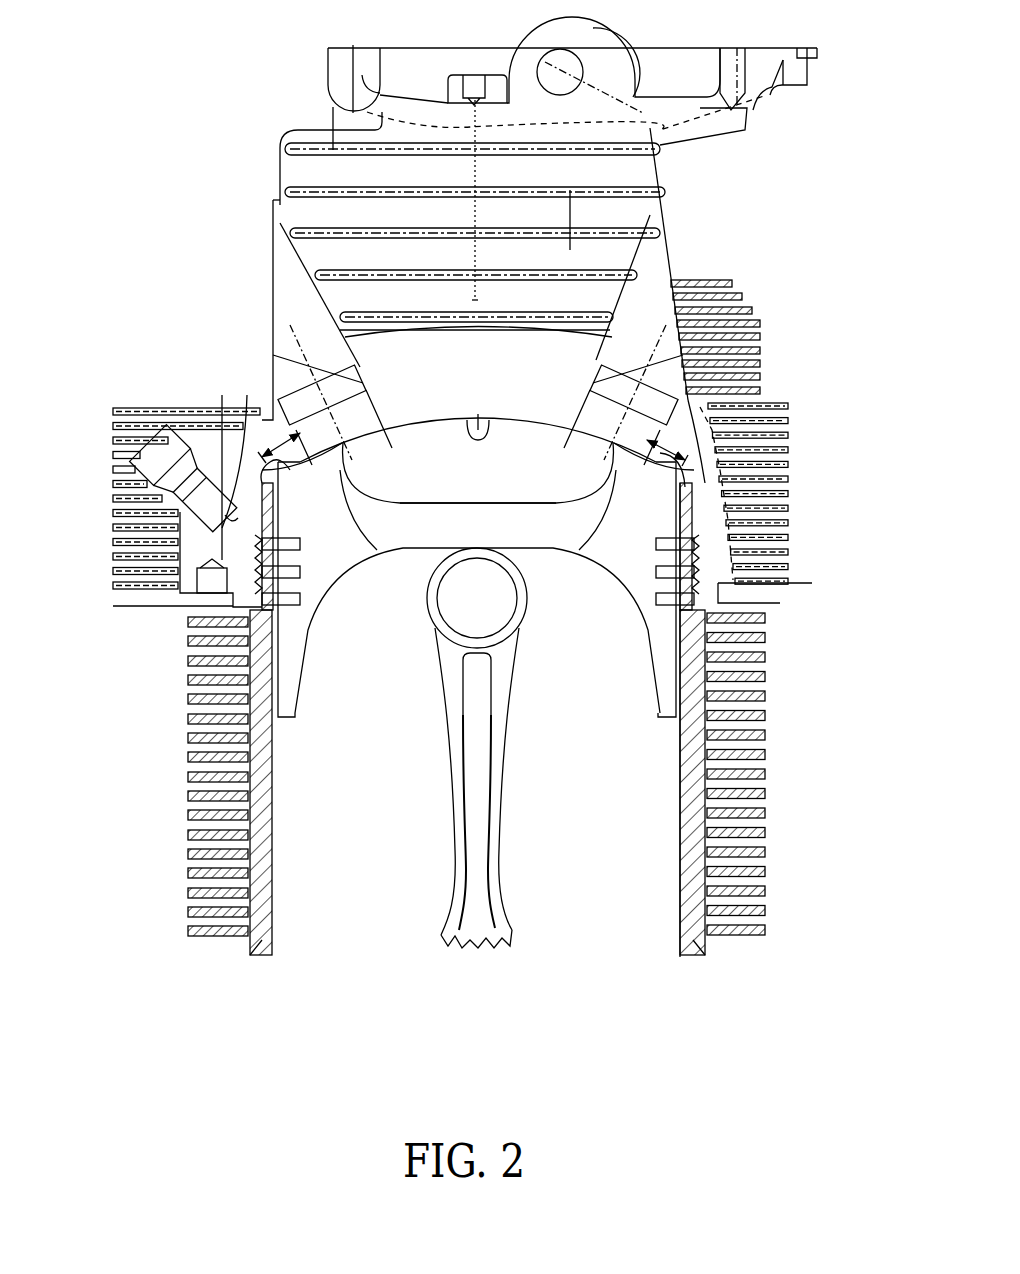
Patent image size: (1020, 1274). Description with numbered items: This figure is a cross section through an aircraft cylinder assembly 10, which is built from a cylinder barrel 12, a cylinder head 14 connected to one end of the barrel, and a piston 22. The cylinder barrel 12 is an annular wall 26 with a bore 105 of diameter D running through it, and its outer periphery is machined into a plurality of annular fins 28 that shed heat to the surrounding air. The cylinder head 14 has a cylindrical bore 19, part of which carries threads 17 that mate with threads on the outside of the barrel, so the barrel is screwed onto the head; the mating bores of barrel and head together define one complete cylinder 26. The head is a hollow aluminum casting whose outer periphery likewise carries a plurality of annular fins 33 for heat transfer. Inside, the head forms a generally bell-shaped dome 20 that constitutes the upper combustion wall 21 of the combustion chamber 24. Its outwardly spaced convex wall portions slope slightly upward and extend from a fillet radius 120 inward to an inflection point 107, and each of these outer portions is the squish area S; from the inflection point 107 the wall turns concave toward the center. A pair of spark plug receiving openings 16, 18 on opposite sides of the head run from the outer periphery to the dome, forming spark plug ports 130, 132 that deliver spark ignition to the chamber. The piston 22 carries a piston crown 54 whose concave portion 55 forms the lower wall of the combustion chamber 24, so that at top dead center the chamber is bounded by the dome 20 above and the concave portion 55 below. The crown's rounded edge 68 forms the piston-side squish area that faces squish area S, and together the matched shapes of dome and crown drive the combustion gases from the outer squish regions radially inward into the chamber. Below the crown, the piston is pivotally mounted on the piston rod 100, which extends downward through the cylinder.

The aircraft cylinder assembly 10 is at (155, 270).
The cylinder barrel 12 is at (230, 958).
The cylinder head 14 is at (283, 140).
The spark plug receiving opening 16 is at (276, 396).
The threads 17 is at (790, 584).
The spark plug receiving opening 18 is at (668, 398).
The cylindrical bore 19 is at (718, 583).
The dome 20 is at (478, 428).
The upper combustion wall 21 is at (477, 420).
The piston 22 is at (398, 690).
The combustion chamber 24 is at (491, 475).
The cylinder 26 is at (592, 808).
The annular fins 28 is at (185, 785).
The annular fins 33 is at (793, 398).
The piston crown 54 is at (760, 512).
The concave portion 55 is at (512, 490).
The rounded edge 68 is at (257, 535).
The piston rod 100 is at (478, 925).
The bore 105 is at (683, 878).
The inflection point 107 is at (362, 525).
The fillet radius 120 is at (262, 457).
The spark plug port 130 is at (283, 398).
The spark plug port 132 is at (630, 330).
The squish area S is at (240, 430).